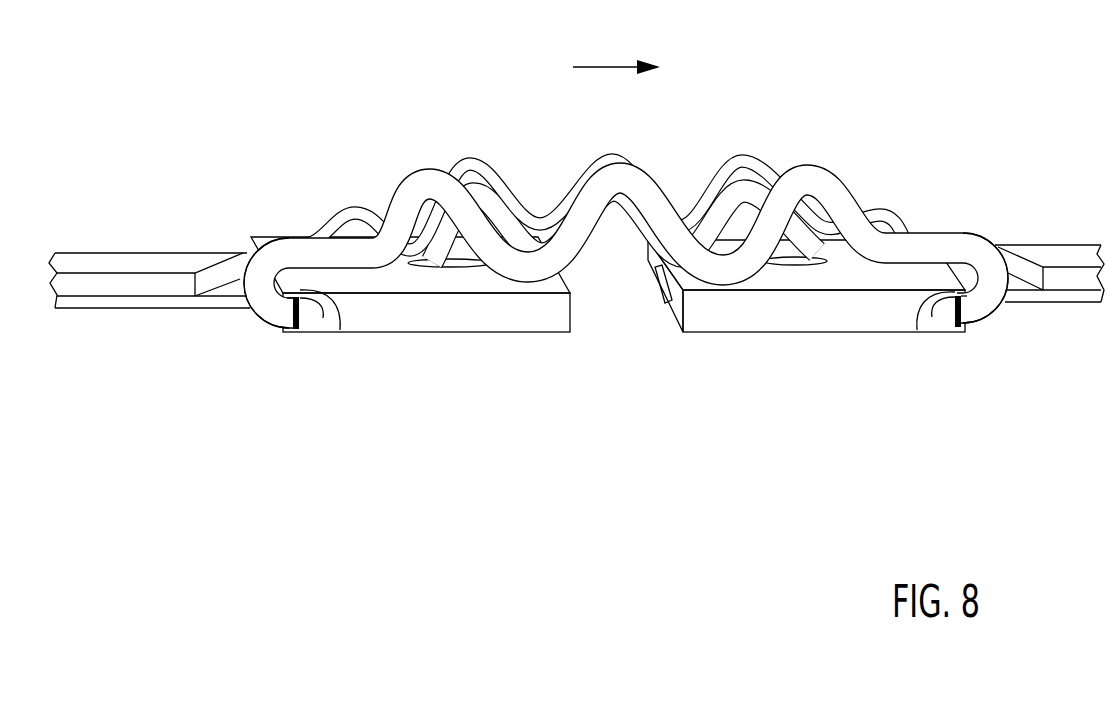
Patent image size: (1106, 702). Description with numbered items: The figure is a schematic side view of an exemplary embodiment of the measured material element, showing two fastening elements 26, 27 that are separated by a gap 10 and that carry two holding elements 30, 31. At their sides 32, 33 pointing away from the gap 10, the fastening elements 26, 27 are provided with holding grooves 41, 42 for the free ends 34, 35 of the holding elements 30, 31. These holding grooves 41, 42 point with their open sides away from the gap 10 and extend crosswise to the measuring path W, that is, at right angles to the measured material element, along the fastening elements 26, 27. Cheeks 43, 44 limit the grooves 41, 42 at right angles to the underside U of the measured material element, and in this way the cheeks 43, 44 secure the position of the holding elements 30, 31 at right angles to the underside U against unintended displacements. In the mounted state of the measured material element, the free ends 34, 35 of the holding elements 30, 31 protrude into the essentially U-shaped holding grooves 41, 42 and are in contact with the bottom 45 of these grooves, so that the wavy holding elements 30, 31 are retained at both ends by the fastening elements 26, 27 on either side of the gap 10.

The gap 10 is at (630, 396).
The fastening element 26 is at (462, 332).
The fastening element 27 is at (783, 332).
The holding element 30 is at (514, 158).
The holding element 31 is at (660, 176).
The side 32 is at (258, 352).
The holding groove 41 is at (252, 335).
The side 33 is at (1010, 351).
The holding groove 42 is at (998, 335).
The free end 34 is at (243, 322).
The free end 35 is at (1016, 320).
The cheek 43 is at (289, 334).
The cheek 44 is at (322, 293).
The bottom 45 is at (302, 314).
The underside U is at (134, 336).
The measuring path W is at (605, 62).